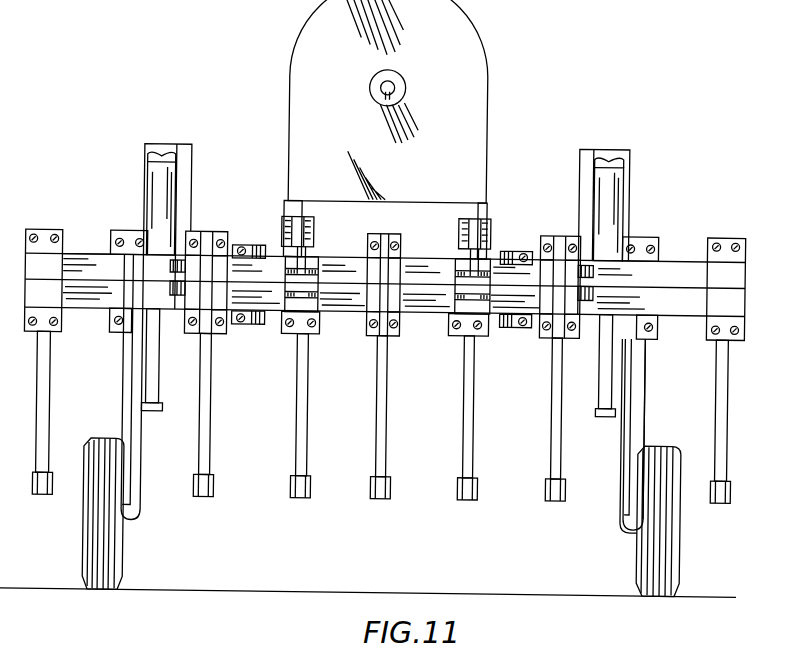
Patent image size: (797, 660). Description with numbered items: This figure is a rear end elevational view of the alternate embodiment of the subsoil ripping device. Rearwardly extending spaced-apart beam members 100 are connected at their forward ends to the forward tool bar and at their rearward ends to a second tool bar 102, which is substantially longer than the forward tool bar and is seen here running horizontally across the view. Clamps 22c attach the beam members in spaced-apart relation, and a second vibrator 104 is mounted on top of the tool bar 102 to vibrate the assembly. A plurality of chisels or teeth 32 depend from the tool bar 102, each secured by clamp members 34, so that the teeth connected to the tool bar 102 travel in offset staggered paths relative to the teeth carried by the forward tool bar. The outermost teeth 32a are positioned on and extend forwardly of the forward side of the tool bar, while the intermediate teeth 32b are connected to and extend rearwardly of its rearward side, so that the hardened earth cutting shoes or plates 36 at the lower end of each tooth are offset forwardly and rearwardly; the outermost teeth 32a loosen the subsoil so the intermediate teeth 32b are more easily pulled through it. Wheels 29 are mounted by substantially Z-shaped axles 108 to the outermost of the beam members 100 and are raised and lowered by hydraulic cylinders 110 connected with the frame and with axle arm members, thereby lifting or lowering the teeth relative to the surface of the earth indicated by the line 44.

The clamps 22c is at (248, 247).
The wheels 29 is at (126, 553).
The chisels or teeth 32 is at (119, 395).
The outermost teeth 32a is at (52, 368).
The intermediate teeth 32b is at (212, 433).
The clamp members 34 is at (30, 234).
The earth cutting hardened shoe or plate 36 is at (35, 487).
The surface of the earth 44 is at (273, 592).
The beam members 100 is at (172, 263).
The second tool bar 102 is at (110, 256).
The second vibrator 104 is at (287, 84).
The Z-shaped axles 108 is at (623, 493).
The hydraulic cylinders 110 is at (143, 203).